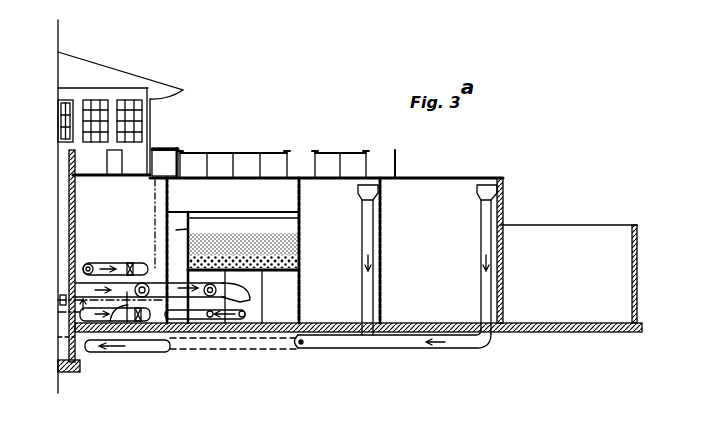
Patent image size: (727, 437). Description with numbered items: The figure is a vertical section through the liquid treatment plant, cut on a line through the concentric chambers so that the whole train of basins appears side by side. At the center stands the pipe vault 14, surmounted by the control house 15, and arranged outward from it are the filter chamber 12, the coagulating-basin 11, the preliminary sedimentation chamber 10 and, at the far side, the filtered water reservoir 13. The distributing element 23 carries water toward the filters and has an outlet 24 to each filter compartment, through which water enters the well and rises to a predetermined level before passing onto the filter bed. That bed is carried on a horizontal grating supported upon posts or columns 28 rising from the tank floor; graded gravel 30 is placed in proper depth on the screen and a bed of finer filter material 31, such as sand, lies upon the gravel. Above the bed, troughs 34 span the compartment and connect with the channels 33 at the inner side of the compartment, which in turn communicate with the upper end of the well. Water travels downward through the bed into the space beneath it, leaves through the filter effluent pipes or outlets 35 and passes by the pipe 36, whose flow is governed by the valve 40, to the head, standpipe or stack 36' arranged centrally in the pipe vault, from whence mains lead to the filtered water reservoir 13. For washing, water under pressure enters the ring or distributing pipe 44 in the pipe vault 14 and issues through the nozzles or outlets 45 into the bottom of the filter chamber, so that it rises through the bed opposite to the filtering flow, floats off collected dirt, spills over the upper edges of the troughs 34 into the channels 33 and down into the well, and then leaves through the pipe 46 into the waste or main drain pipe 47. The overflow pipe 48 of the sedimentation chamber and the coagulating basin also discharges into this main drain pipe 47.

The preliminary sedimentation chamber 10 is at (474, 157).
The coagulating-basin 11 is at (330, 187).
The filter chamber 12 is at (232, 188).
The filtered water reservoir 13 is at (578, 210).
The central pipe vault 14 is at (155, 185).
The control house 15 is at (100, 75).
The distributing element 23 is at (89, 283).
The outlet 24 is at (148, 224).
The posts or columns 28 is at (276, 300).
The graded gravel 30 is at (300, 264).
The finer filter material 31 is at (300, 240).
The channels 33 is at (177, 227).
The troughs 34 is at (258, 222).
The filter effluent pipes or outlets 35 is at (210, 318).
The pipe 36 is at (350, 366).
The head, standpipe or stack 36' is at (118, 256).
The valve 40 is at (80, 318).
The ring or distributing pipe 44 is at (127, 320).
The nozzles or outlets 45 is at (200, 297).
The pipe 46 is at (127, 292).
The waste or main drain pipe 47 is at (356, 346).
The overflow pipe 48 is at (486, 273).